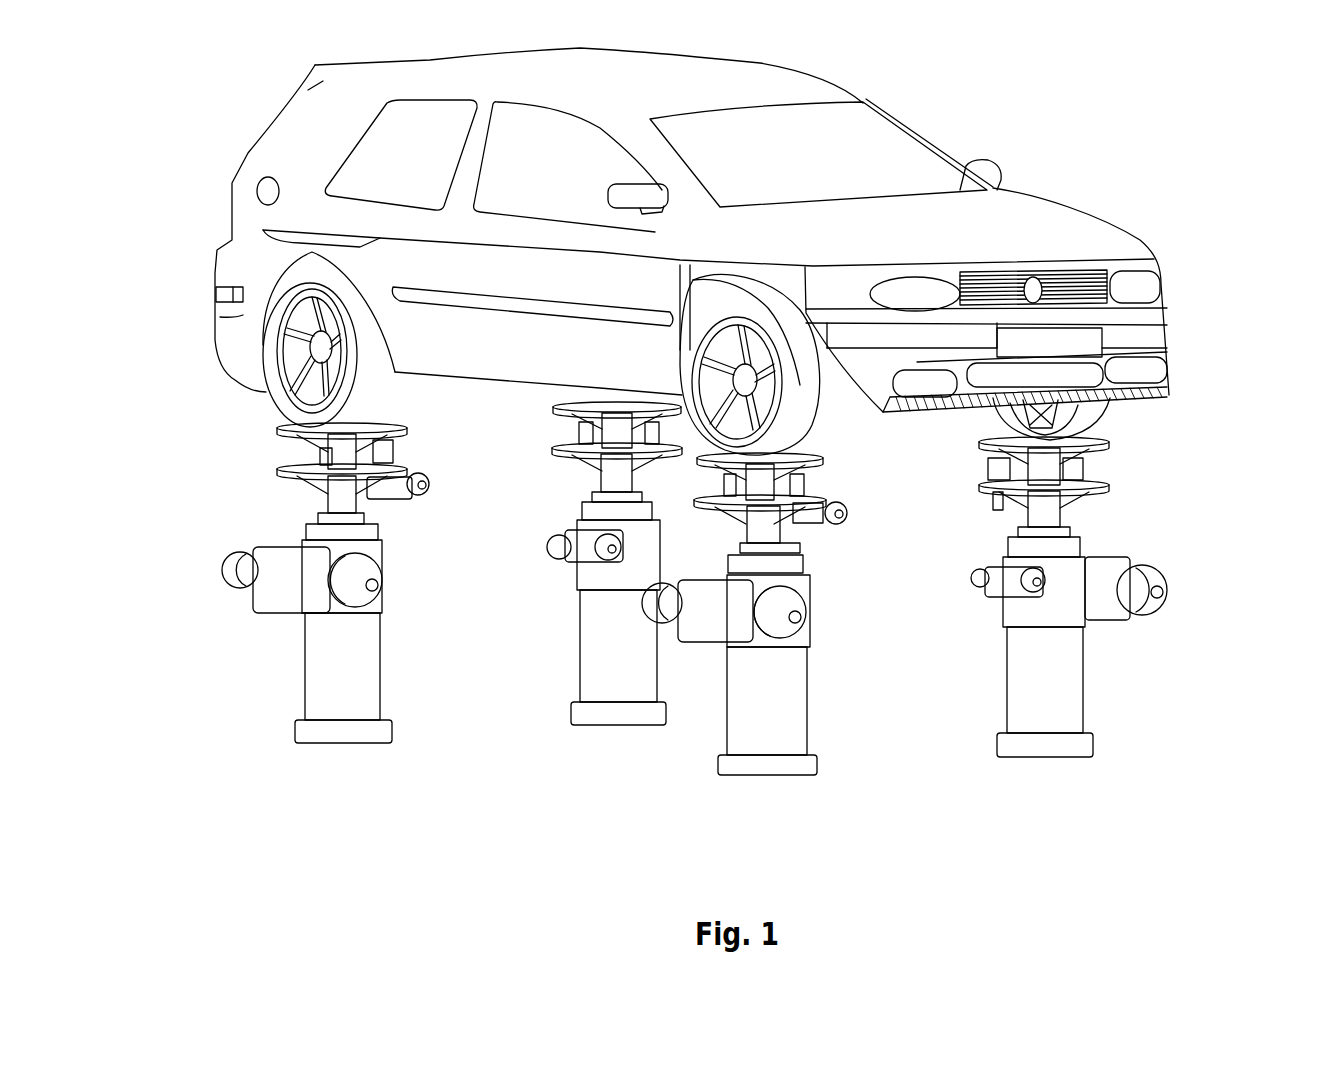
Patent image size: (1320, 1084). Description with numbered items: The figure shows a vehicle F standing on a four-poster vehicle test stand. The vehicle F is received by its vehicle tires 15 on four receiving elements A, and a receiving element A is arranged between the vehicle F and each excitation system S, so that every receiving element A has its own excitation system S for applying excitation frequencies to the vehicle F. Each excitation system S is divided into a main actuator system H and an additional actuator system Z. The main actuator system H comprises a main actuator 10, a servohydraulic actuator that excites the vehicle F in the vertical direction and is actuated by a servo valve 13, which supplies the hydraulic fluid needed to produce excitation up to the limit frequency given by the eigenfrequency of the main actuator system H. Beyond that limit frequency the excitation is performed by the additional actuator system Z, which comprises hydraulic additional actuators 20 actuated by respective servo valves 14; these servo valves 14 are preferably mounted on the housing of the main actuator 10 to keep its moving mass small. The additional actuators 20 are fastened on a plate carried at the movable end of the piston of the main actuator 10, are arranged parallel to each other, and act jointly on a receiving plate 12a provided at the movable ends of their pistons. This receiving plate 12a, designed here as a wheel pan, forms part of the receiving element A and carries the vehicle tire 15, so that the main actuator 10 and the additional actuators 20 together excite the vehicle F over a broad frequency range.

The main actuator 10 is at (363, 693).
The receiving plate 12a is at (1103, 443).
The servo valve 13 is at (283, 592).
The servo valve 14 is at (417, 490).
The vehicle tire 15 is at (292, 398).
The additional actuator 20 is at (300, 462).
The receiving element A is at (1168, 440).
The vehicle F is at (692, 230).
The main actuator system H is at (398, 582).
The excitation system S is at (266, 683).
The additional actuator system Z is at (410, 450).